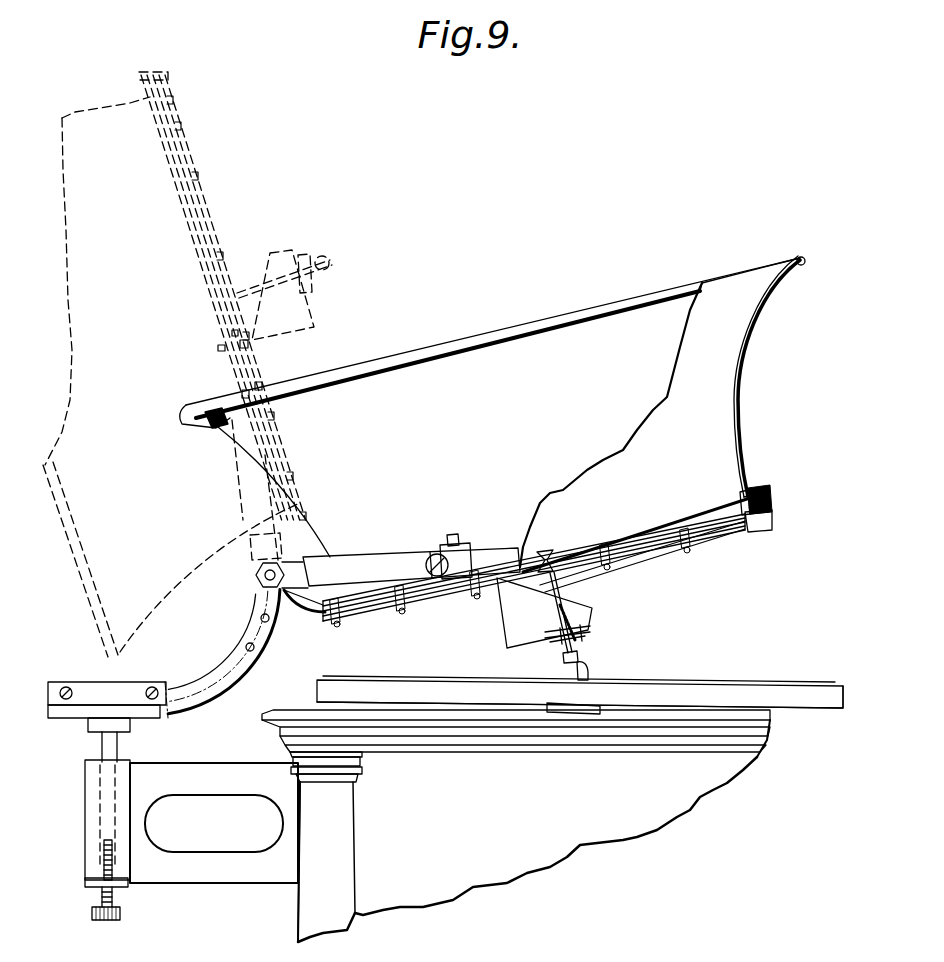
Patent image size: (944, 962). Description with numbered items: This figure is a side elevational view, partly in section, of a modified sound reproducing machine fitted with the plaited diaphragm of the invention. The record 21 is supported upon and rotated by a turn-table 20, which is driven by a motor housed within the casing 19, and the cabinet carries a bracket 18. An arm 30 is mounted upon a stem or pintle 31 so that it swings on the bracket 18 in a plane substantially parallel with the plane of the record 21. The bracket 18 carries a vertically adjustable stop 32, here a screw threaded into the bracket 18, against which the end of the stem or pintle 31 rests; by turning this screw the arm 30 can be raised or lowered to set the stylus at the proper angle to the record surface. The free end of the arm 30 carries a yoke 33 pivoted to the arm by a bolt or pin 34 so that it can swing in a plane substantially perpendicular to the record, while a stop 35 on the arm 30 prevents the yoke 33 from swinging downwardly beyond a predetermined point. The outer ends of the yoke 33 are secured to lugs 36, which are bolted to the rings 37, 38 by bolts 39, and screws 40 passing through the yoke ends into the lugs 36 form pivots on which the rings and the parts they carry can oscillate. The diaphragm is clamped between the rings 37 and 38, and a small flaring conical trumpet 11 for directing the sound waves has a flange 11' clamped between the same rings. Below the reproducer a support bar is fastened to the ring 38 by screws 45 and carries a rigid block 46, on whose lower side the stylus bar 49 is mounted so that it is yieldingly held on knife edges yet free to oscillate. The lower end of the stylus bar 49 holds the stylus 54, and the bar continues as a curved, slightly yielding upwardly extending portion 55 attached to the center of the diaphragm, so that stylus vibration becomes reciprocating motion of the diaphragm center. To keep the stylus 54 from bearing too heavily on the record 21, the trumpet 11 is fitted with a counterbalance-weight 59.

The trumpet 11 is at (662, 414).
The flange 11' is at (782, 503).
The bracket 18 is at (217, 868).
The casing 19 is at (482, 815).
The turn-table 20 is at (827, 702).
The record 21 is at (672, 683).
The arm 30 is at (230, 678).
The stem or pintle 31 is at (118, 750).
The vertically adjustable stop 32 is at (100, 897).
The yoke 33 is at (372, 550).
The bolt or pin 34 is at (256, 578).
The stop 35 is at (290, 612).
The lugs 36 is at (458, 567).
The ring 37 is at (770, 490).
The ring 38 is at (768, 514).
The bolts 39 is at (452, 543).
The screws 40 is at (437, 553).
The screws 45 is at (500, 600).
The block 46 is at (583, 607).
The stylus bar 49 is at (577, 640).
The stylus 54 is at (563, 667).
The upwardly extending portion 55 is at (557, 603).
The counterbalance-weight 59 is at (196, 428).